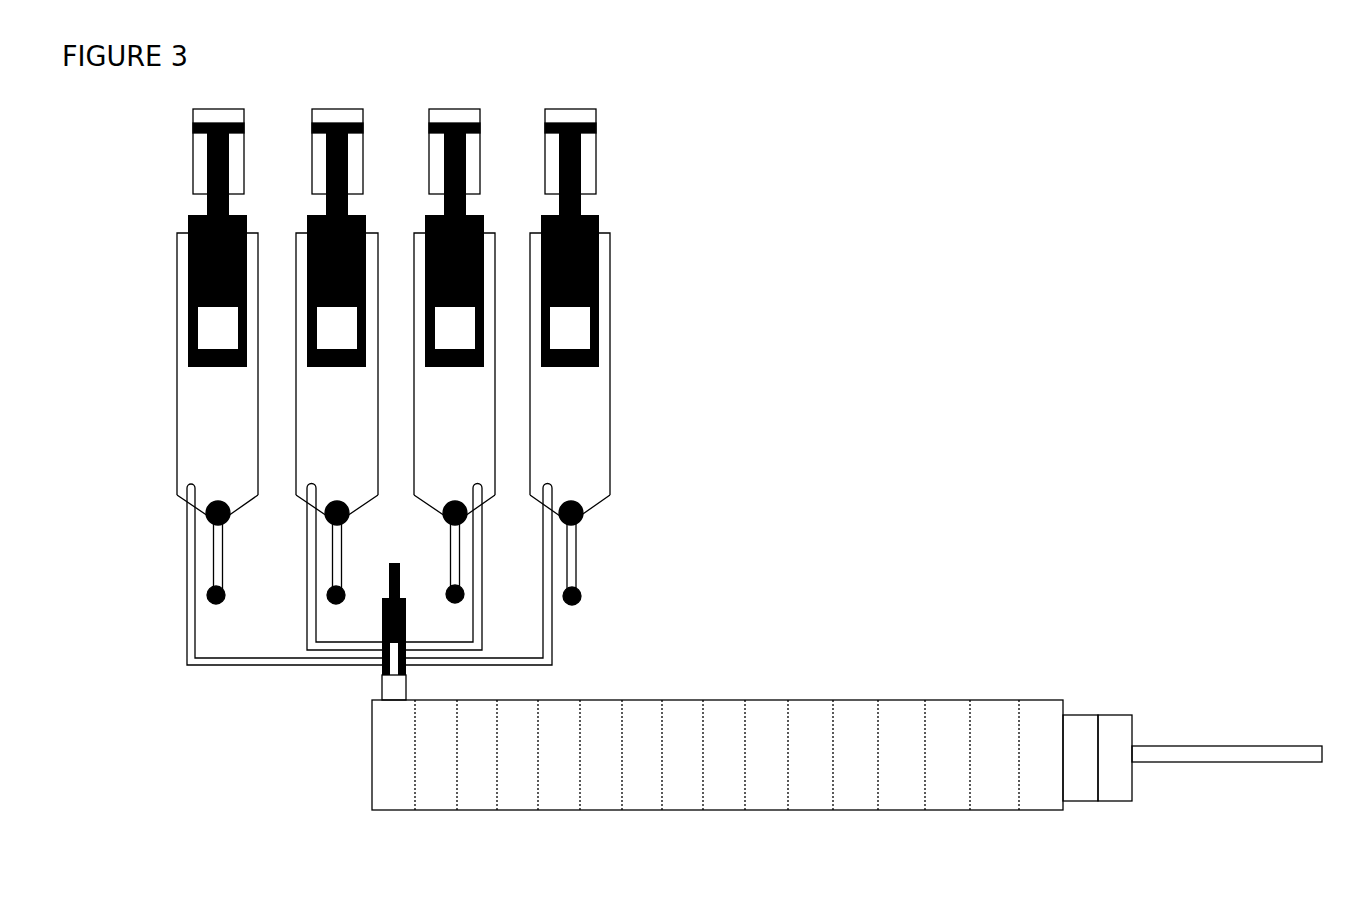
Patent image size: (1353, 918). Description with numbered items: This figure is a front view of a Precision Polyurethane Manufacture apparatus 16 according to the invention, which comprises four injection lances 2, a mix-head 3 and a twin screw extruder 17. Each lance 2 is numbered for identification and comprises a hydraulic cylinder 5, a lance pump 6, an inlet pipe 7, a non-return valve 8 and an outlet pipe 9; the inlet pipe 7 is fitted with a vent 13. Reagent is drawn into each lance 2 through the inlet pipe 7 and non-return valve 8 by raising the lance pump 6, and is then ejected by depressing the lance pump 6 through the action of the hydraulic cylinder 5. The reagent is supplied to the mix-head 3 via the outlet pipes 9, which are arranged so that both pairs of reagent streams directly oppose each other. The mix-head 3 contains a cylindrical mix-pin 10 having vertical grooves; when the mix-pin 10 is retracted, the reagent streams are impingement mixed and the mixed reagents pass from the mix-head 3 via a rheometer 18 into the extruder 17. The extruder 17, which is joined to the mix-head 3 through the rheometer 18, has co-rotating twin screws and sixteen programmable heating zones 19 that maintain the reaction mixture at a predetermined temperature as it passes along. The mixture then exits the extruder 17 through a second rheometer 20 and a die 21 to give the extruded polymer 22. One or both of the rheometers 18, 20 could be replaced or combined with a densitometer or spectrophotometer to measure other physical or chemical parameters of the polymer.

The injection lance 2 is at (611, 365).
The mix-head 3 is at (406, 627).
The hydraulic cylinder 5 is at (594, 152).
The lance pump 6 is at (599, 282).
The inlet pipe 7 is at (223, 556).
The non-return valve 8 is at (582, 518).
The outlet pipe 9 is at (185, 622).
The mix-pin 10 is at (400, 573).
The vent 13 is at (580, 600).
The Precision Polyurethane Manufacture apparatus 16 is at (441, 387).
The twin screw extruder 17 is at (717, 724).
The rheometer 18 is at (383, 680).
The programmable heating zones 19 is at (717, 774).
The second rheometer 20 is at (1082, 713).
The die 21 is at (1132, 730).
The extruded polymer 22 is at (1270, 762).